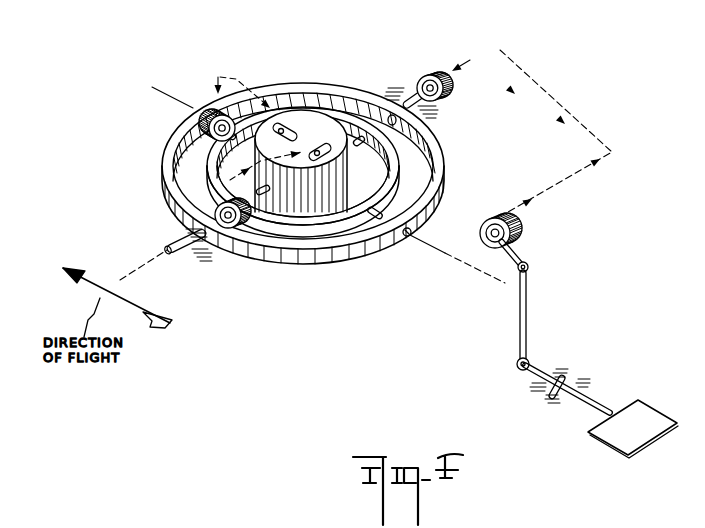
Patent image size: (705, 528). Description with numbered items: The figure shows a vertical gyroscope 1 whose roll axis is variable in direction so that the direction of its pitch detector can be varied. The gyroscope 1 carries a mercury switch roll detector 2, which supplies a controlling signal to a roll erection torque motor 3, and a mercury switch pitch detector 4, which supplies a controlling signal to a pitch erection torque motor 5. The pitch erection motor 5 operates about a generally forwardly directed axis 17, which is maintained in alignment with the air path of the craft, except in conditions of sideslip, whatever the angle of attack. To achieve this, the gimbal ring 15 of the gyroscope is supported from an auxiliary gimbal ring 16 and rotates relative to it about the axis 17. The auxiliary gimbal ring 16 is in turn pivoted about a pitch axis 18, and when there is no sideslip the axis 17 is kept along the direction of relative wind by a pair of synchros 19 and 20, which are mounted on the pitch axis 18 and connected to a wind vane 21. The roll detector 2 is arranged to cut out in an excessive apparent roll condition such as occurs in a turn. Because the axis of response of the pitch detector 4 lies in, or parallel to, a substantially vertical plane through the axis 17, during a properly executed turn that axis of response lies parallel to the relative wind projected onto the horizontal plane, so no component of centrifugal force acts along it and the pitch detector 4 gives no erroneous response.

The vertical gyroscope 1 is at (320, 134).
The mercury switch roll detector 2 is at (326, 145).
The roll erection torque motor 3 is at (232, 233).
The mercury switch pitch detector 4 is at (288, 118).
The pitch erection torque motor 5 is at (203, 108).
The gimbal ring 15 is at (407, 156).
The auxiliary gimbal ring 16 is at (338, 256).
The forwardly directed axis 17 is at (410, 238).
The pitch axis 18 is at (158, 253).
The synchro 19 is at (430, 67).
The synchro 20 is at (518, 227).
The wind vane 21 is at (652, 413).